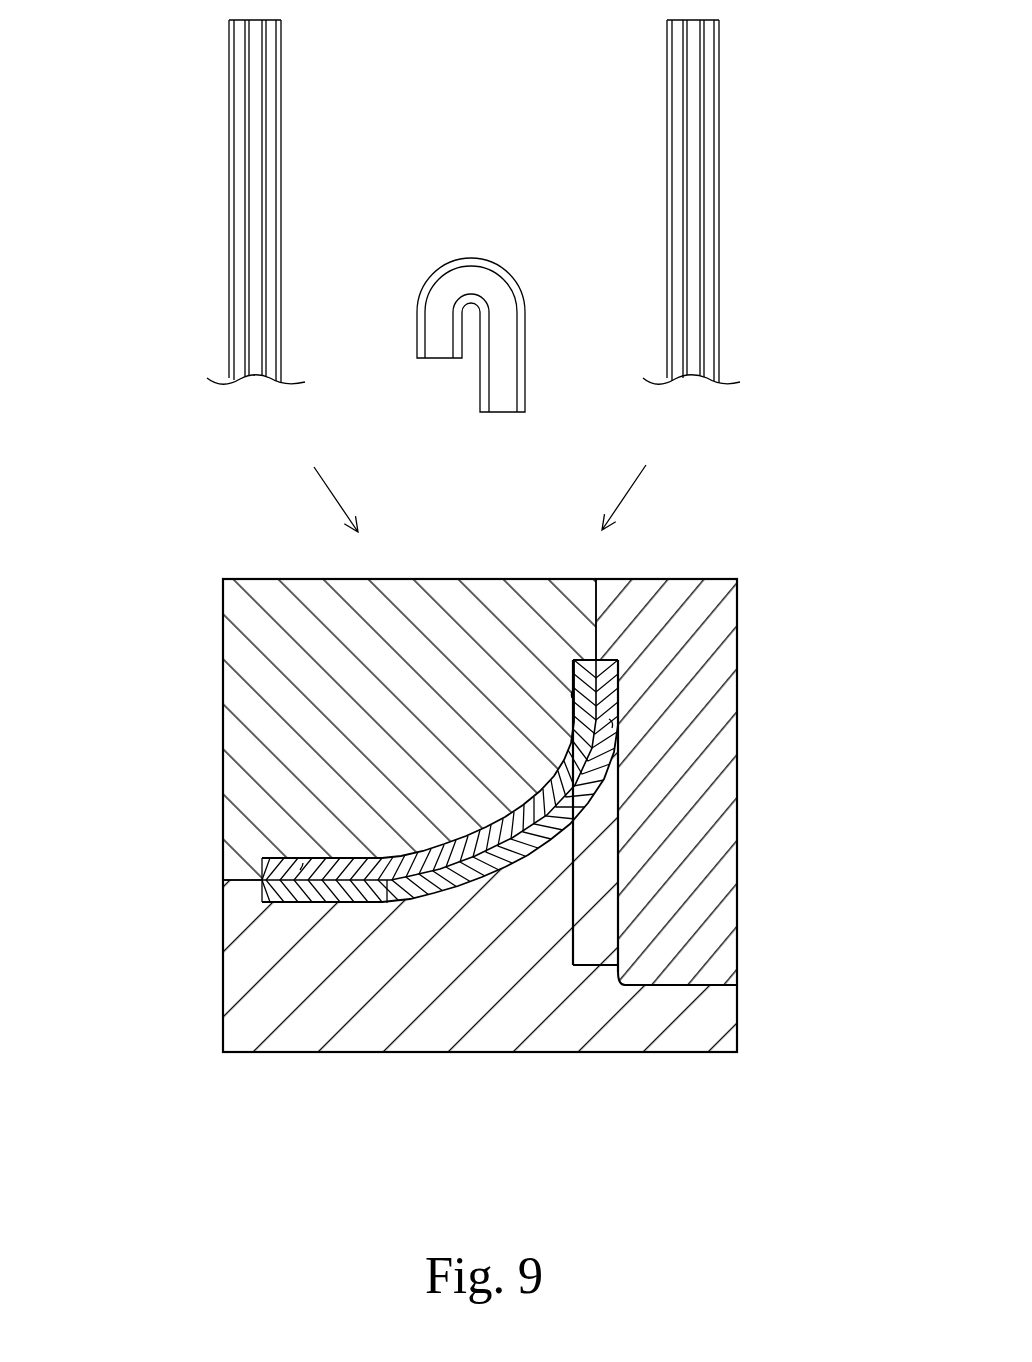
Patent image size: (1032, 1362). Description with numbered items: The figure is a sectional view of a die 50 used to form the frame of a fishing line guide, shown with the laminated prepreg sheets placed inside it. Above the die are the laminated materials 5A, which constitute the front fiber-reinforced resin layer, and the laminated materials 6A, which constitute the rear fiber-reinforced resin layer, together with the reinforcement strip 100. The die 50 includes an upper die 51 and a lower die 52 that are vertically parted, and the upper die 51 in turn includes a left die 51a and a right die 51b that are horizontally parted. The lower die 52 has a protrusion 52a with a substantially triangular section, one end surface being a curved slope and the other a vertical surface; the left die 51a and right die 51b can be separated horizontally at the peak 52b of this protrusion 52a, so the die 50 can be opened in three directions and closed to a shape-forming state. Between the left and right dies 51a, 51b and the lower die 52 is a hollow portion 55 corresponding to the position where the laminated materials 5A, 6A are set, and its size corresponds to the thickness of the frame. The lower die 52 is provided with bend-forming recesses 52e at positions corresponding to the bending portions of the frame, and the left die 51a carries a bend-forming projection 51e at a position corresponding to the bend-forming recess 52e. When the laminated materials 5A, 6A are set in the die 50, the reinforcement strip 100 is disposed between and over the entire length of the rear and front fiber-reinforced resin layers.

The prepregs (laminated material) 5A is at (757, 133).
The prepregs (laminated material) 6A is at (193, 133).
The reinforcement strip 100 is at (470, 262).
The die 50 is at (502, 839).
The upper die 51 is at (496, 725).
The left die (front die) 51a is at (254, 623).
The right die (rear die) 51b is at (720, 692).
The bend-forming projection 51e is at (568, 780).
The lower die (bottom die) 52 is at (535, 936).
The protrusion 52a is at (565, 833).
The peak 52b is at (600, 801).
The bend-forming recesses 52e is at (573, 825).
The hollow portion 55 is at (575, 688).